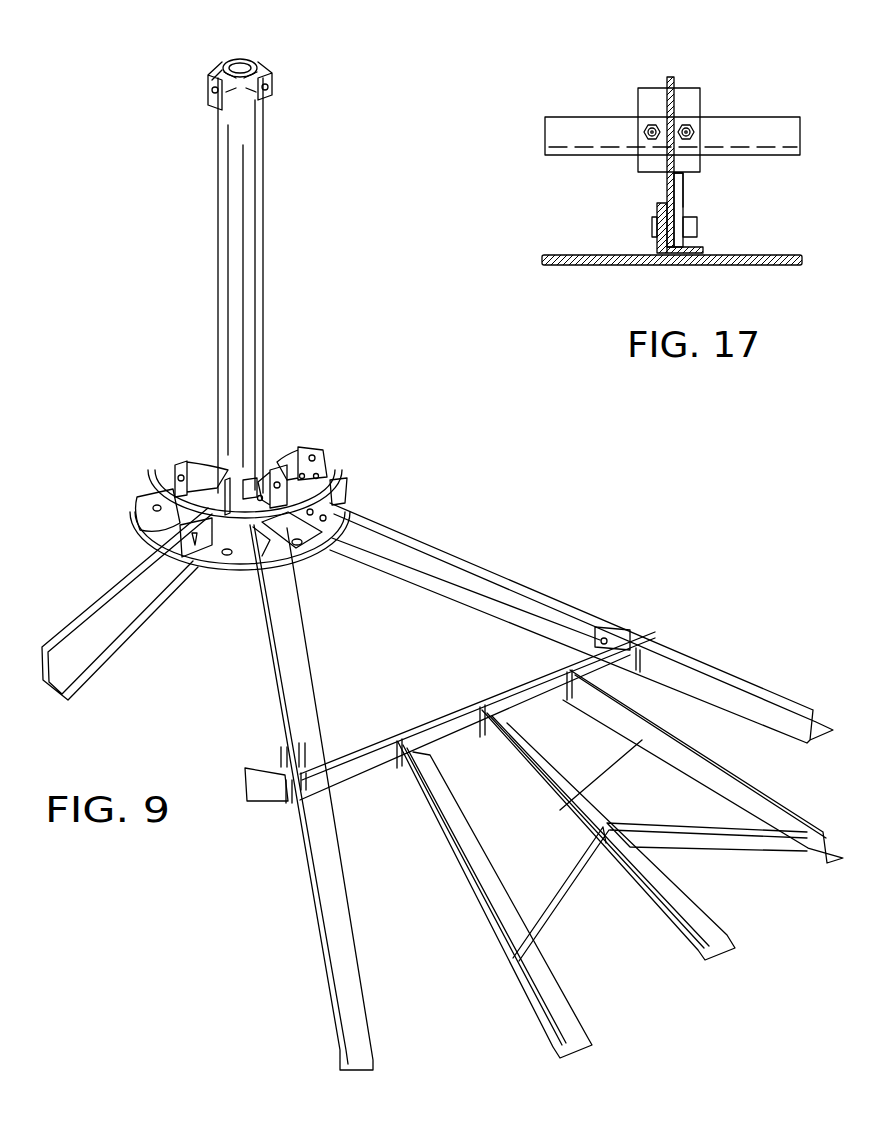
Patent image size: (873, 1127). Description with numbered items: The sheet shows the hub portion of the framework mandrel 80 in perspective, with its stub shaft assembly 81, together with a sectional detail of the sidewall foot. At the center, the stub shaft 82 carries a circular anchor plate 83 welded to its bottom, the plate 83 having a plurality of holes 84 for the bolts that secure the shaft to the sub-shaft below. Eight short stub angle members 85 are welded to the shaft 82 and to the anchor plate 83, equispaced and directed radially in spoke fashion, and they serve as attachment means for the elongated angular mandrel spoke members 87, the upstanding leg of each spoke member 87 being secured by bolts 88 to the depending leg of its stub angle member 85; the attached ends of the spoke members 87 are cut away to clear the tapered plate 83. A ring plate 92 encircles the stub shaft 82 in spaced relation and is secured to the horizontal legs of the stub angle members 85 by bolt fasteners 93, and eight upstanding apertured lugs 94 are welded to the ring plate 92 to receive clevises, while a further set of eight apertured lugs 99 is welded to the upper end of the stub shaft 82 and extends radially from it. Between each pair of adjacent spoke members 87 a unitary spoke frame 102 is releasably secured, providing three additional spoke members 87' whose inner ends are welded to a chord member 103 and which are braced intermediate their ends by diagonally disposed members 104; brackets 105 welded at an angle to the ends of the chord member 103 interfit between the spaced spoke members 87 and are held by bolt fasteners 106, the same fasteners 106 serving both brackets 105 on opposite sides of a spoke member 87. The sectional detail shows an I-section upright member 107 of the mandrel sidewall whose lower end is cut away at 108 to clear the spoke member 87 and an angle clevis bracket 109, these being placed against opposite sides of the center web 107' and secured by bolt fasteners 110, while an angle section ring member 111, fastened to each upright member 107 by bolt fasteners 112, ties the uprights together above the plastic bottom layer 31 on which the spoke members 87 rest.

In FIG. 9, the mandrel 80 is at (608, 578).
In FIG. 9, the hub assembly 81 is at (366, 428).
In FIG. 9, the stub shaft 82 is at (260, 272).
In FIG. 9, the anchor plate 83 is at (230, 578).
In FIG. 9, the holes 84 is at (228, 556).
In FIG. 9, the stub angle members 85 is at (346, 490).
In FIG. 9, the mandrel spoke members 87 is at (426, 623).
In FIG. 17, the mandrel spoke members 87 is at (650, 228).
In FIG. 9, the additional mandrel spoke members 87' is at (620, 864).
In FIG. 9, the bolts 88 is at (205, 568).
In FIG. 9, the ring plate 92 is at (158, 485).
In FIG. 9, the bolt fasteners 93 is at (258, 484).
In FIG. 9, the apertured lugs 94 is at (228, 470).
In FIG. 9, the apertured lugs 99 is at (250, 122).
In FIG. 9, the spoke frame 102 is at (496, 993).
In FIG. 9, the chord member 103 is at (395, 733).
In FIG. 9, the diagonally disposed members 104 is at (628, 917).
In FIG. 9, the brackets 105 is at (284, 738).
In FIG. 9, the bolt fasteners 106 is at (302, 748).
In FIG. 17, the upright members 107 is at (700, 124).
In FIG. 17, the center web 107' is at (636, 166).
In FIG. 17, the cut away 108 is at (684, 192).
In FIG. 17, the angle clevis bracket 109 is at (684, 198).
In FIG. 17, the bolt fasteners 110 is at (694, 222).
In FIG. 17, the angle section ring member 111 is at (545, 132).
In FIG. 17, the bolt fasteners 112 is at (684, 126).
In FIG. 17, the plastic bottom layer 31 is at (590, 265).